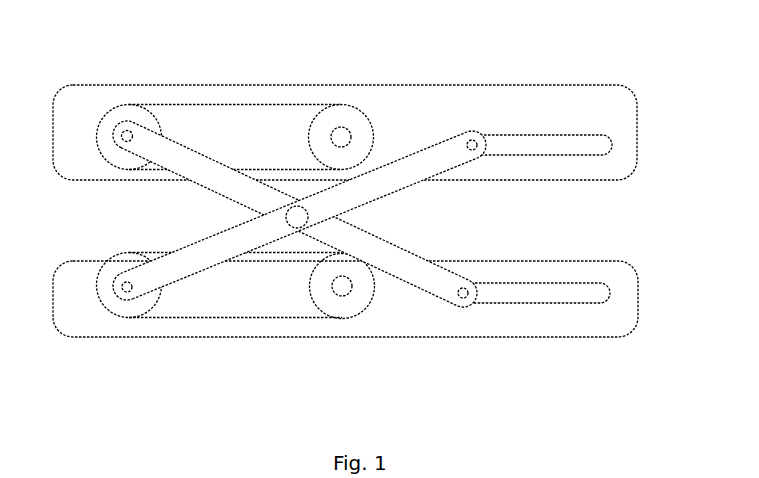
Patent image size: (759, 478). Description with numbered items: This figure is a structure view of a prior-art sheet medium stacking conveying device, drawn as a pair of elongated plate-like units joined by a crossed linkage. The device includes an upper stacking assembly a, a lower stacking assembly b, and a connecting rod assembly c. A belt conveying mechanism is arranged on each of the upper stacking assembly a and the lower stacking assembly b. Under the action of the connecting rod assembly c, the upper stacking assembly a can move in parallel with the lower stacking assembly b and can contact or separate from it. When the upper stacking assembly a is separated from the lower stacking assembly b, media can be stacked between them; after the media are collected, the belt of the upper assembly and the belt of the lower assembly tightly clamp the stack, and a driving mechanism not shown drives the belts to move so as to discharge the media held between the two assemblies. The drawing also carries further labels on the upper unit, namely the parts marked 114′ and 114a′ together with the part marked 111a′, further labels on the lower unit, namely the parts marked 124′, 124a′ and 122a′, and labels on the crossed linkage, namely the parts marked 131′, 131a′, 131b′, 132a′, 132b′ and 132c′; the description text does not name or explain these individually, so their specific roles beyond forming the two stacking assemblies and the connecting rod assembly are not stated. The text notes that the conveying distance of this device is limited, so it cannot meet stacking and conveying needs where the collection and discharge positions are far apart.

The upper slide plate 114′ is at (552, 102).
The upper plate slot 114a′ is at (593, 146).
The lower slide plate 124′ is at (577, 328).
The lower plate slot 124a′ is at (527, 293).
The lower pulley 122a′ is at (341, 290).
The upper left pivot pin 111a′ is at (122, 130).
The lower left pivot pin 131′ is at (124, 291).
The upper right pin 131a′ is at (472, 143).
The lower right pin 131b′ is at (463, 300).
The first link arm 132a′ is at (170, 167).
The second link arm 132b′ is at (402, 175).
The central pivot of link arms 132c′ is at (297, 220).
The upper stacking assembly a is at (67, 130).
The lower stacking assembly b is at (67, 305).
The connecting rod assembly c is at (220, 190).